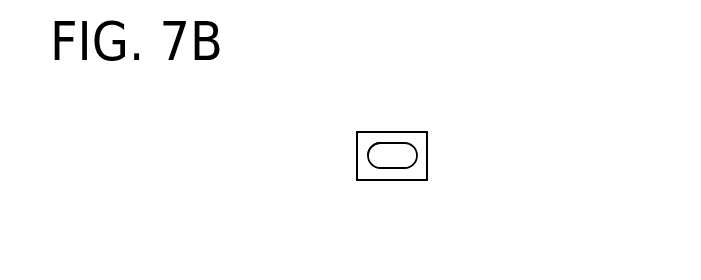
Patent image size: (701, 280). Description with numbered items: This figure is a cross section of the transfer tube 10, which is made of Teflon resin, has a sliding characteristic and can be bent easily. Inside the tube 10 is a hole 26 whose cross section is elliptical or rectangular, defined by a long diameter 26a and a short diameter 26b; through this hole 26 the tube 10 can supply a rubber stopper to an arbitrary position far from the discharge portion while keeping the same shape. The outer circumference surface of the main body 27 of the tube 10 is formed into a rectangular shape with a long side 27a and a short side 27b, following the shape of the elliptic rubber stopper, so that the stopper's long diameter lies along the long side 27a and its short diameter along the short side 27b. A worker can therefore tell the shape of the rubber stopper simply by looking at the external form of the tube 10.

The tube 10 is at (432, 155).
The hole 26 is at (403, 156).
The long diameter 26a is at (370, 145).
The short diameter 26b is at (390, 165).
The main body 27 is at (423, 132).
The long side 27a is at (394, 132).
The short side 27b is at (357, 164).